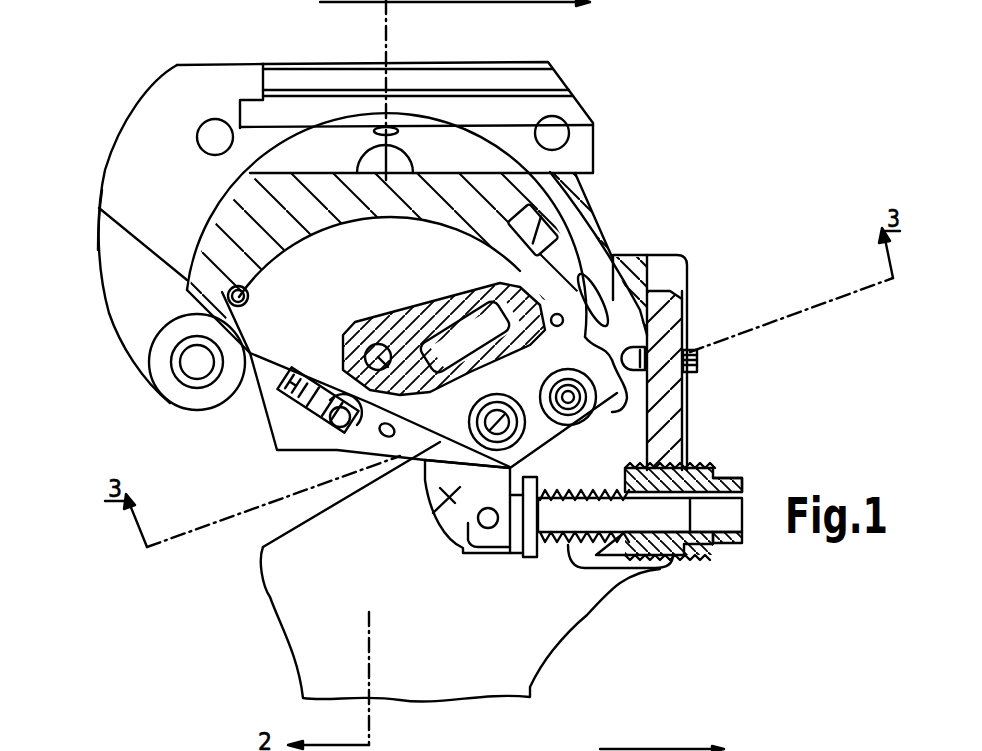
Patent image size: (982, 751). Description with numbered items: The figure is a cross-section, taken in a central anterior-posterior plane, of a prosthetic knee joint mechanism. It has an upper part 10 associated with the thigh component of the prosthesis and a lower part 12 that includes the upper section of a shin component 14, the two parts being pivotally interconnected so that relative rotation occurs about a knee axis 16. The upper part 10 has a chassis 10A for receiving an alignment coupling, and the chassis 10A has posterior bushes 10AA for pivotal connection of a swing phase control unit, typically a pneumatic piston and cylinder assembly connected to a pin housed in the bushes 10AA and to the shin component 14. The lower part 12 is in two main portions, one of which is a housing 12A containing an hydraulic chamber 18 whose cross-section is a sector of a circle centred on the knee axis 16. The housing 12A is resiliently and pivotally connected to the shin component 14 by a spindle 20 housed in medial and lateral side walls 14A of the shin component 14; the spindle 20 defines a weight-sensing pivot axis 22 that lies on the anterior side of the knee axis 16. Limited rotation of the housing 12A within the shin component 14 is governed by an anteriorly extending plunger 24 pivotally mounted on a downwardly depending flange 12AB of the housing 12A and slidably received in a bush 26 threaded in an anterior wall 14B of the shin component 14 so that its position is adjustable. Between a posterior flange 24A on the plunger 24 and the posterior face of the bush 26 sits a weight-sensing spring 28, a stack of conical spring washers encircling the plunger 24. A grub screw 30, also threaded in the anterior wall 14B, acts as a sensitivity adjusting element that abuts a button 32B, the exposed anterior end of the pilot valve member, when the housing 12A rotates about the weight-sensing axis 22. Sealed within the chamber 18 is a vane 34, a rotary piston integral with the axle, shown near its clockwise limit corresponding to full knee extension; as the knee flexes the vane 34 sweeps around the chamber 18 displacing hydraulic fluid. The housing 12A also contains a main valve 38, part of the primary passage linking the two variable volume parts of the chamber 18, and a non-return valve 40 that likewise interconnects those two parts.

The upper part 10 is at (116, 118).
The chassis 10A is at (130, 160).
The posterior bushes 10AA is at (173, 383).
The lower part 12 is at (750, 276).
The housing 12A is at (580, 217).
The downwardly depending flange 12AB is at (448, 506).
The shin component 14 is at (248, 670).
The side walls 14A is at (381, 547).
The anterior wall 14B is at (680, 408).
The knee axis 16 is at (372, 345).
The hydraulic chamber 18 is at (426, 266).
The spindle 20 is at (470, 421).
The weight-sensing pivot axis 22 is at (493, 425).
The plunger 24 is at (676, 518).
The posterior flange 24A is at (530, 562).
The bush 26 is at (700, 468).
The weight-sensing spring 28 is at (590, 555).
The grub screw 30 is at (690, 350).
The button 32B is at (615, 392).
The vane 34 is at (427, 313).
The main valve 38 is at (582, 418).
The non-return valve 40 is at (333, 435).